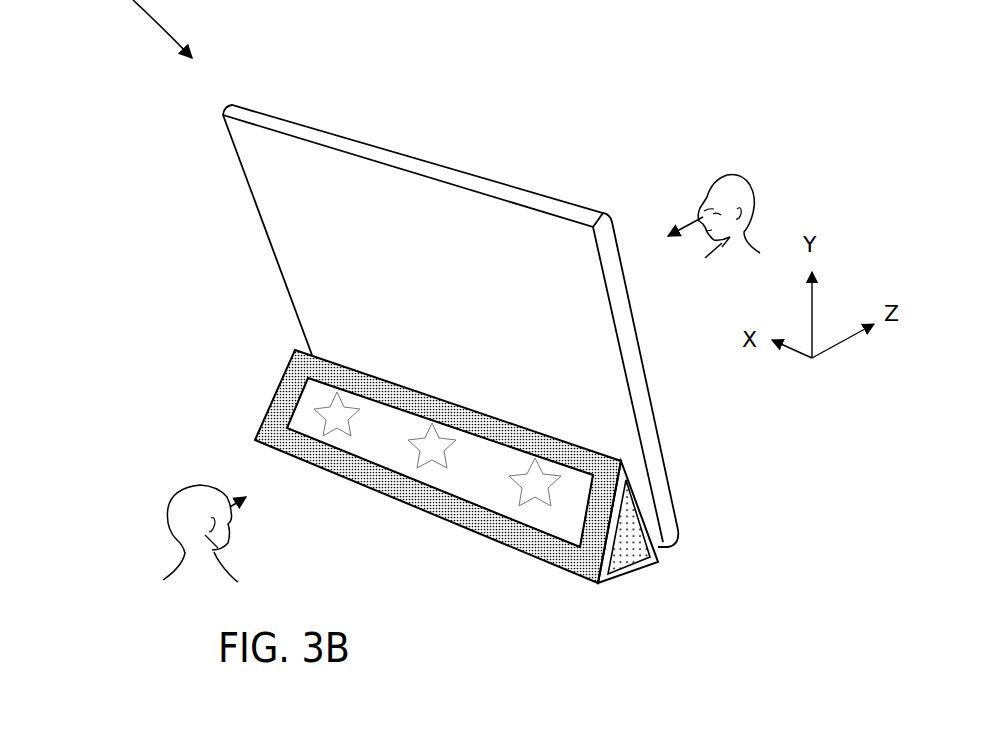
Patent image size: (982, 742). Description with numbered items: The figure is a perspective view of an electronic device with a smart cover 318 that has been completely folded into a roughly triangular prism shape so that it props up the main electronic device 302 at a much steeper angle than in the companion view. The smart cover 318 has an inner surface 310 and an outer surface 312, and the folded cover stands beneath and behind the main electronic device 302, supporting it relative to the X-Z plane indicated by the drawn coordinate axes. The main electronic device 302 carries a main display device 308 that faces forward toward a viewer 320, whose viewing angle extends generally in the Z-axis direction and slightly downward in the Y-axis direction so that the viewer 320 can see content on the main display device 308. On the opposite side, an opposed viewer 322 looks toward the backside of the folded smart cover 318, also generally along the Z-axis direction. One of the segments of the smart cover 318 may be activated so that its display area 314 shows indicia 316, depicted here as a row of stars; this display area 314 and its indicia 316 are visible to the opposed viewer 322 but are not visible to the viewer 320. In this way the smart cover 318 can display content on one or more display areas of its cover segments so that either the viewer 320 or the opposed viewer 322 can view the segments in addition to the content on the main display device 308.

The main electronic device 302 is at (257, 212).
The main display device 308 is at (348, 277).
The inner surface 310 is at (449, 493).
The outer surface 312 is at (628, 562).
The display area 314 is at (483, 483).
The indicia 316 is at (535, 502).
The smart cover 318 is at (257, 416).
The viewer 320 is at (742, 175).
The opposed viewer 322 is at (167, 525).